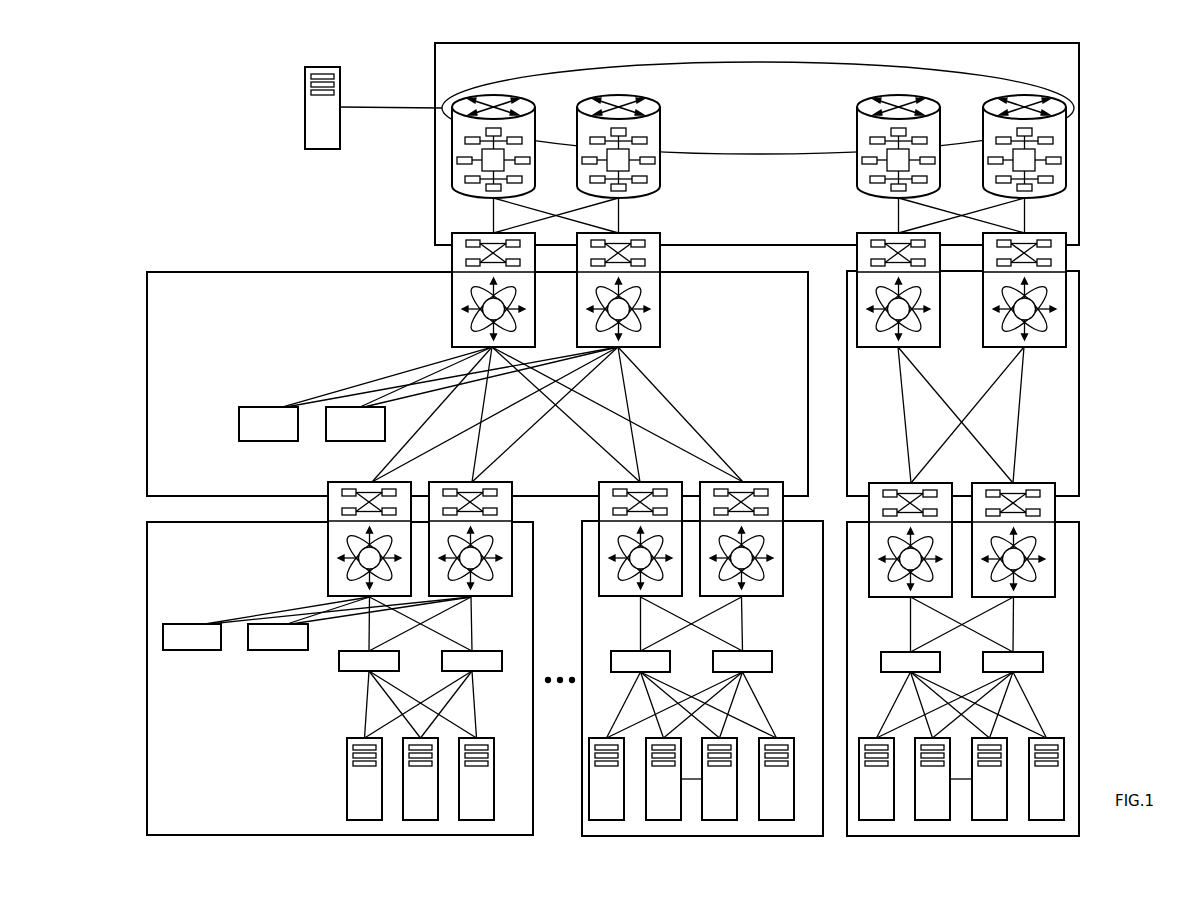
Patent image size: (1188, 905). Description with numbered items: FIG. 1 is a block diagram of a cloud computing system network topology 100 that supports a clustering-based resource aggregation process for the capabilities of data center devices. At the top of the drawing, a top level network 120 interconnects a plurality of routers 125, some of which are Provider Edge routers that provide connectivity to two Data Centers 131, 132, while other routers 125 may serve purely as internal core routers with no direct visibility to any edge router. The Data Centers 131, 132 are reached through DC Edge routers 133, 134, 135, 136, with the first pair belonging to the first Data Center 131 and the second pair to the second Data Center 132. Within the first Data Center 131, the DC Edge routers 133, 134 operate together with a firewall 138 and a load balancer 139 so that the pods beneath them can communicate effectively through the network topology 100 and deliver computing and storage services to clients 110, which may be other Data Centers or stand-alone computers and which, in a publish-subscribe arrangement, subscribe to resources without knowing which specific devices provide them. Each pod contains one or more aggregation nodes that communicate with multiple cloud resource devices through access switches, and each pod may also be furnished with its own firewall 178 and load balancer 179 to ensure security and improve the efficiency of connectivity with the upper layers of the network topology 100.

The cloud computing system network topology 100 is at (1112, 129).
The clients 110 is at (305, 127).
The top level network 120 is at (1079, 225).
The routers 125 is at (535, 126).
The Data Center 131 is at (147, 362).
The Data Center 132 is at (1079, 393).
The DC Edge router 133 is at (452, 260).
The DC Edge router 134 is at (660, 292).
The DC Edge router 135 is at (857, 232).
The DC Edge router 136 is at (1066, 258).
The firewall 138 is at (239, 423).
The load balancer 139 is at (350, 441).
The firewall 178 is at (201, 650).
The load balancer 179 is at (283, 650).